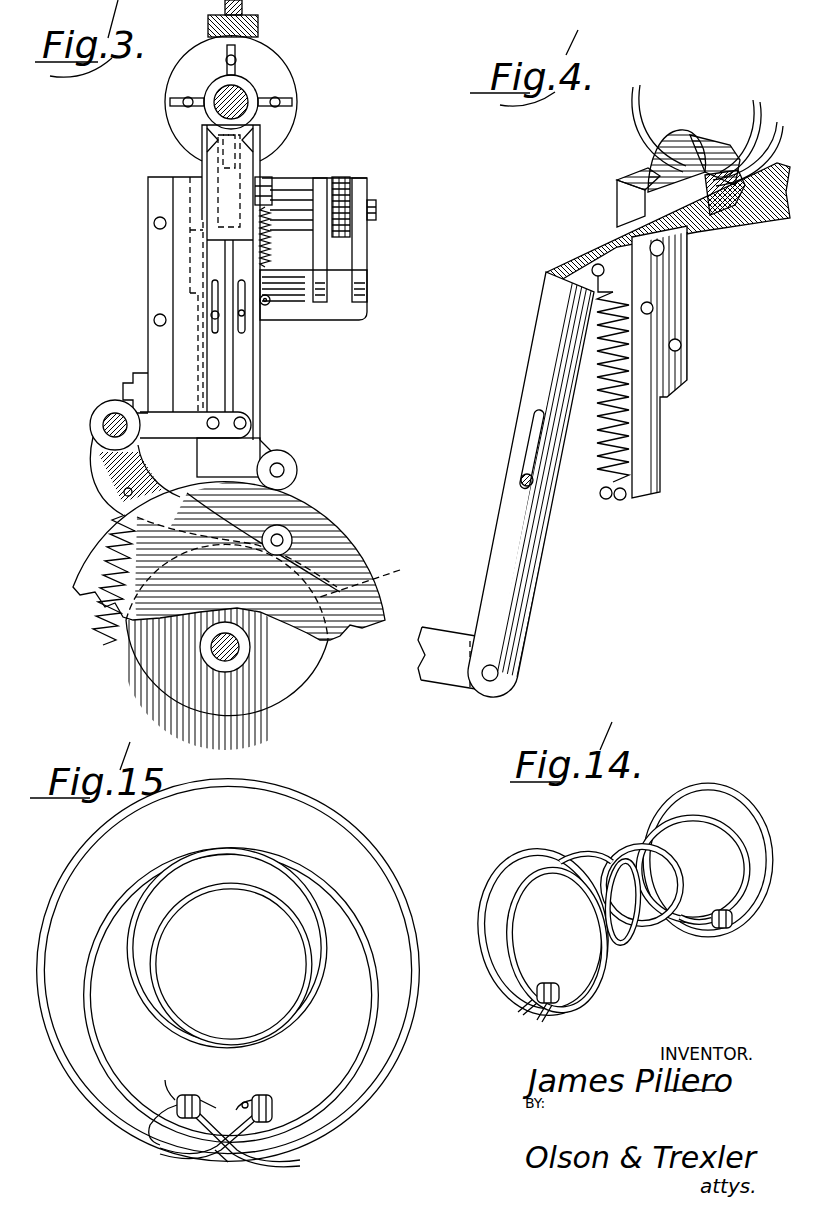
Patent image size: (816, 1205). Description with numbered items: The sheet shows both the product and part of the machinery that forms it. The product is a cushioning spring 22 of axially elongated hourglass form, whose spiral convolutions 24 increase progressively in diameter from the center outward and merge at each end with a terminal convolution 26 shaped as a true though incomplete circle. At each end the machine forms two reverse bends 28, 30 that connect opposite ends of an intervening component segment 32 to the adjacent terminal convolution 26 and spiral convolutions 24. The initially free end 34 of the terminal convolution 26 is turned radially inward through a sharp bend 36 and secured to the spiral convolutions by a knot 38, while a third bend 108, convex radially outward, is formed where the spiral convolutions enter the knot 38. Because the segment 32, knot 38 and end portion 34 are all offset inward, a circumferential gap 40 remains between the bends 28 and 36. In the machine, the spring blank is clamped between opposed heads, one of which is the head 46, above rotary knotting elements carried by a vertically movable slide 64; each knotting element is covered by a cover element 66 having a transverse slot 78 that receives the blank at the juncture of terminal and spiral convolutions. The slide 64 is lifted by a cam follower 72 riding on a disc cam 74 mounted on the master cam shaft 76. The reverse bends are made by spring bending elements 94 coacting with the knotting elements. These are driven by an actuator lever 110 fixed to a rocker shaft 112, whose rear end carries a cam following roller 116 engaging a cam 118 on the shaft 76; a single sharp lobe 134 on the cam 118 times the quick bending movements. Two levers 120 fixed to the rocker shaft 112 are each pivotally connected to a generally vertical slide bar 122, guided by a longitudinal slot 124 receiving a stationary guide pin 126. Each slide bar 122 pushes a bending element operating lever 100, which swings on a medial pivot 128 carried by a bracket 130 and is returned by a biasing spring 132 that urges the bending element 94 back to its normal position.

In FIG. 15, the cushioning spring 22 is at (336, 807).
In FIG. 14, the cushioning spring 22 is at (713, 782).
In FIG. 15, the spiral convolutions 24 is at (100, 1030).
In FIG. 14, the spiral convolutions 24 is at (633, 950).
In FIG. 15, the terminal convolutions 26 is at (398, 887).
In FIG. 14, the terminal convolutions 26 is at (737, 812).
In FIG. 15, the reverse bend 28 is at (238, 1162).
In FIG. 15, the reverse bend 30 is at (214, 1108).
In FIG. 15, the intervening component segment 32 is at (245, 1108).
In FIG. 14, the intervening component segment 32 is at (540, 1010).
In FIG. 15, the free end of terminal convolution 34 is at (165, 1125).
In FIG. 14, the free end of terminal convolution 34 is at (527, 1010).
In FIG. 15, the sharp bend 36 is at (165, 1155).
In FIG. 15, the knot 38 is at (196, 1110).
In FIG. 14, the knot 38 is at (550, 995).
In FIG. 15, the gap 40 is at (216, 1164).
In FIG. 14, the gap 40 is at (553, 1010).
In FIG. 3, the movable head 46 is at (297, 66).
In FIG. 3, the slide 64 is at (243, 450).
In FIG. 4, the cover element 66 is at (640, 153).
In FIG. 3, the cam follower 72 is at (297, 470).
In FIG. 3, the disc cam 74 is at (340, 552).
In FIG. 3, the master cam shaft 76 is at (277, 655).
In FIG. 4, the transverse slot 78 is at (703, 130).
In FIG. 4, the spring bending element 94 is at (723, 147).
In FIG. 3, the bending element operating lever 100 is at (200, 163).
In FIG. 4, the bending element operating lever 100 is at (700, 233).
In FIG. 15, the third bend 108 is at (182, 1104).
In FIG. 3, the actuator lever 110 is at (110, 463).
In FIG. 3, the rocker shaft 112 is at (102, 425).
In FIG. 3, the cam following roller 116 is at (290, 533).
In FIG. 3, the cam 118 is at (307, 677).
In FIG. 3, the lever 120 is at (157, 420).
In FIG. 4, the lever 120 is at (440, 670).
In FIG. 3, the slide bar 122 is at (243, 355).
In FIG. 4, the slide bar 122 is at (517, 578).
In FIG. 4, the longitudinal slot 124 is at (535, 442).
In FIG. 4, the guide pin 126 is at (527, 480).
In FIG. 4, the medial pivot 128 is at (660, 253).
In FIG. 4, the bracket 130 is at (670, 368).
In FIG. 4, the spring 132 is at (620, 433).
In FIG. 3, the single lobe 134 is at (383, 576).